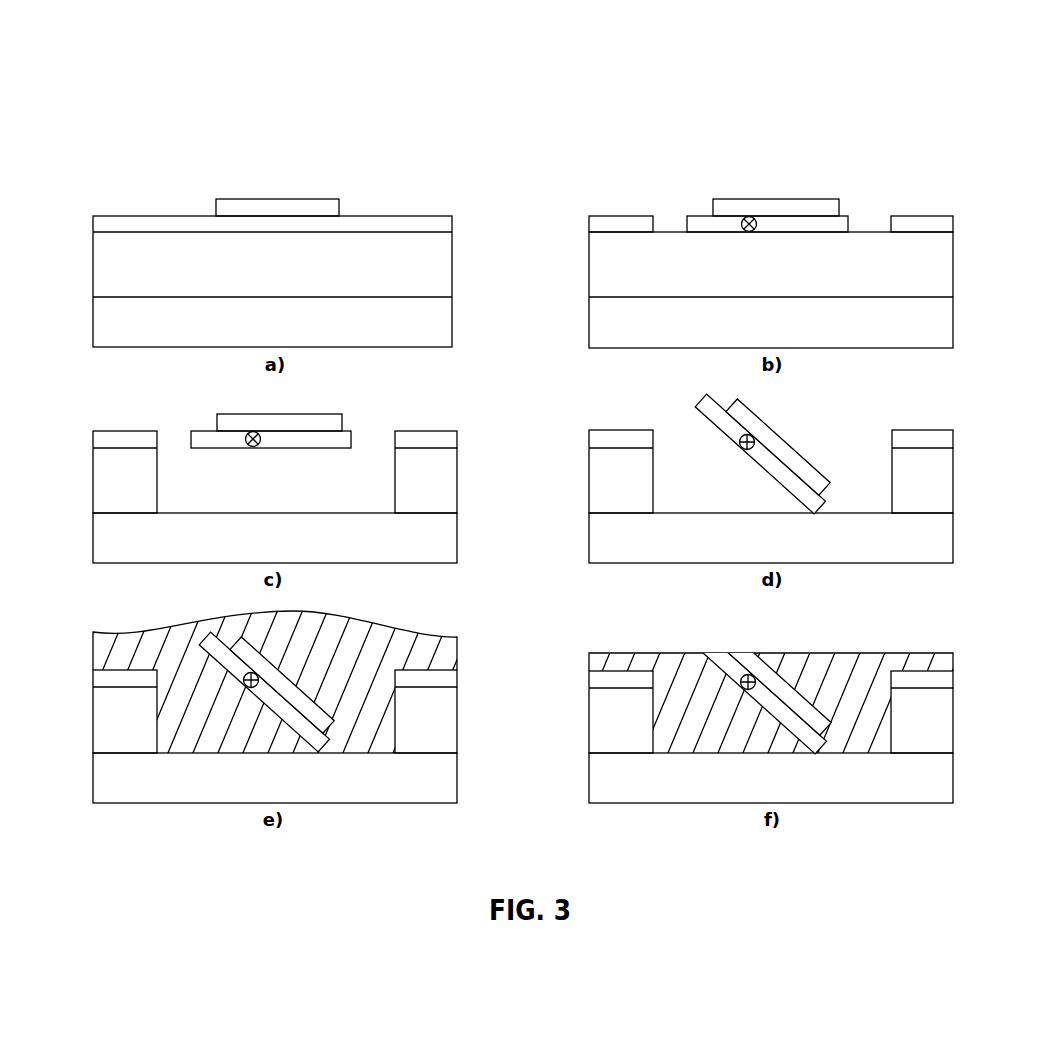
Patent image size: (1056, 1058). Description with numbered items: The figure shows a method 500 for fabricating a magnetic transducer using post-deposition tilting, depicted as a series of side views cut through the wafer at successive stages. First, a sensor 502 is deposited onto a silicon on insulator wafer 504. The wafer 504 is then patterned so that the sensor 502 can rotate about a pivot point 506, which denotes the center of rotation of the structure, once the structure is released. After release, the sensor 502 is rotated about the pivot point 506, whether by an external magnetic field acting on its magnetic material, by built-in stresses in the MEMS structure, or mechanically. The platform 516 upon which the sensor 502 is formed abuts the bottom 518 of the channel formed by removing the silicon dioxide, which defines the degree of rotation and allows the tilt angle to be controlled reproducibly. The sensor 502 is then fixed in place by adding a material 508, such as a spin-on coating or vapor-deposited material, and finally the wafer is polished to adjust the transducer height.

The method 500 is at (175, 148).
The sensor 502 is at (317, 206).
The silicon on insulator (SOI) wafer 504 is at (472, 218).
The pivot point 506 is at (723, 217).
The material 508 is at (170, 650).
The platform 516 is at (697, 407).
The bottom of the channel 518 is at (857, 507).